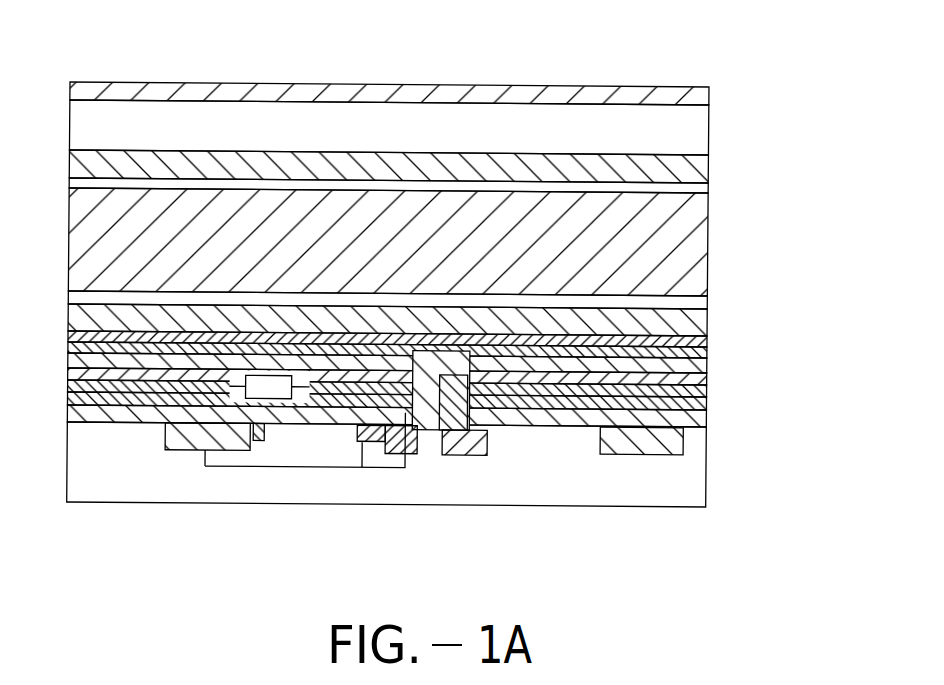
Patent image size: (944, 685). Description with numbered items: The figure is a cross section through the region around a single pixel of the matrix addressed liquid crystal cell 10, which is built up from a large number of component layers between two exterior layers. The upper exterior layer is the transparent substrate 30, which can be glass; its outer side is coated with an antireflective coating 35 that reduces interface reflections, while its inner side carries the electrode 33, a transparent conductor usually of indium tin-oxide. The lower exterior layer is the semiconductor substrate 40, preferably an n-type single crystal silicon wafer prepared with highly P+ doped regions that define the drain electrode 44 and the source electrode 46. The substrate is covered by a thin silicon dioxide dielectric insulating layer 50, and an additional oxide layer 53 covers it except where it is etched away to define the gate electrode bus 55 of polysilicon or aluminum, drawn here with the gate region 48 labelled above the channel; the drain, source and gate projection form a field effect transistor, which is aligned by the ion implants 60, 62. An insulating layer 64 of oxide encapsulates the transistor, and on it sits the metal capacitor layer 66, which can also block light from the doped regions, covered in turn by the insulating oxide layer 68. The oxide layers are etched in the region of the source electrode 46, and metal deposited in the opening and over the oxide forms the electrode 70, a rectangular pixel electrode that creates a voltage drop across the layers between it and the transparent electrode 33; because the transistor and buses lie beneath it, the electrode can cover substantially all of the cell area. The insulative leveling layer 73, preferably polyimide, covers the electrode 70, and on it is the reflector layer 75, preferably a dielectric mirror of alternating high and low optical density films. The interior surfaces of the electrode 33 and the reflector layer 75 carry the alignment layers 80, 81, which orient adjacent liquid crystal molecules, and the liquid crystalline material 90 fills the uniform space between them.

The cell 10 is at (141, 44).
The antireflective coating 35 is at (705, 90).
The transparent substrate 30 is at (703, 126).
The electrode 33 is at (708, 158).
The alignment layer 80 is at (708, 182).
The liquid crystalline material 90 is at (693, 243).
The alignment layer 81 is at (706, 295).
The reflector layer 75 is at (706, 317).
The leveling layer 73 is at (706, 338).
The insulating oxide layer 68 is at (706, 358).
The capacitor layer 66 is at (706, 372).
The insulating layer 64 is at (706, 388).
The additional oxide layer 53 is at (706, 403).
The dielectric insulating layer 50 is at (706, 418).
The semiconductor substrate 40 is at (700, 467).
The drain electrode 44 is at (195, 450).
The ion implant 60 is at (263, 440).
The gate electrode 48 is at (334, 403).
The gate electrode bus 55 is at (300, 465).
The ion implant 62 is at (370, 440).
The electrode 70 is at (443, 412).
The source electrode 46 is at (465, 441).